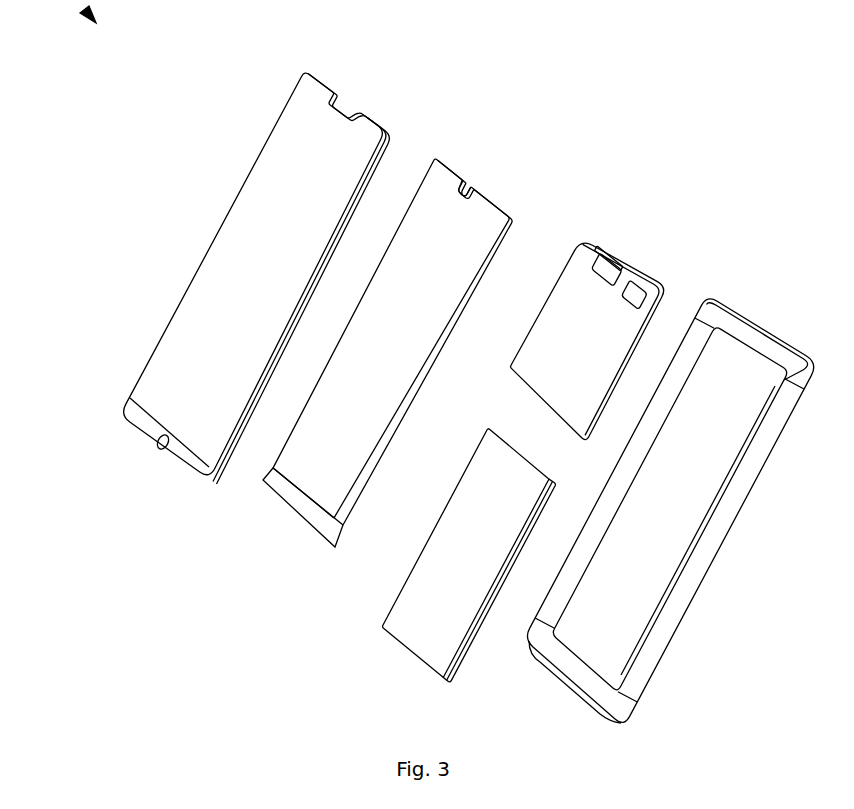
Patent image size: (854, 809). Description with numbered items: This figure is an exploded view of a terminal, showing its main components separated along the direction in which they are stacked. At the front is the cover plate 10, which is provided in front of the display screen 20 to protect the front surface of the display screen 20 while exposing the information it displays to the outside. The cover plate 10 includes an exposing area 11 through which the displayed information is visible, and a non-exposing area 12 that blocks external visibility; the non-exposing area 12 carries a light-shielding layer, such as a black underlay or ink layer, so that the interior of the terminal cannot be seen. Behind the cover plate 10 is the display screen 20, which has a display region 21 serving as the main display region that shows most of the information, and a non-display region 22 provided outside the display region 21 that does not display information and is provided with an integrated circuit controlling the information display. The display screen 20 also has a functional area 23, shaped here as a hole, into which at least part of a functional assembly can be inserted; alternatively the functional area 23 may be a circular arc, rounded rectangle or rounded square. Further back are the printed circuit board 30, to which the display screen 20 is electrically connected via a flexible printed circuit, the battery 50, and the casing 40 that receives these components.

The cover plate 10 is at (273, 122).
The exposing area 11 is at (162, 377).
The non-exposing area 12 is at (185, 460).
The display screen 20 is at (443, 177).
The display region 21 is at (395, 385).
The non-display region 22 is at (308, 510).
The functional area 23 is at (475, 192).
The printed circuit board 30 is at (596, 243).
The casing 40 is at (718, 325).
The battery 50 is at (412, 658).